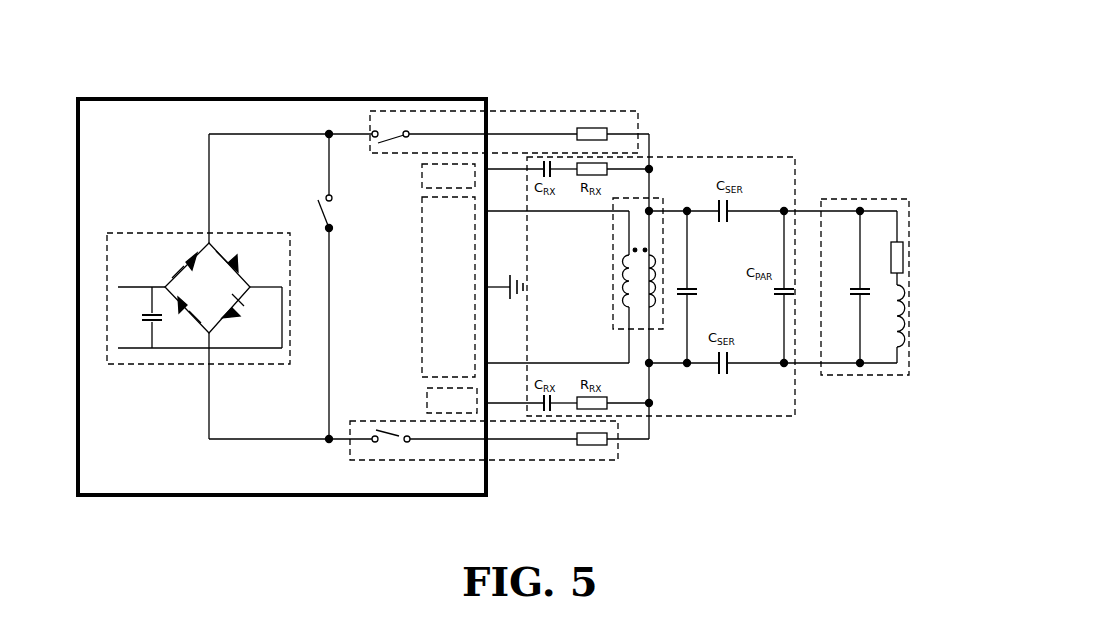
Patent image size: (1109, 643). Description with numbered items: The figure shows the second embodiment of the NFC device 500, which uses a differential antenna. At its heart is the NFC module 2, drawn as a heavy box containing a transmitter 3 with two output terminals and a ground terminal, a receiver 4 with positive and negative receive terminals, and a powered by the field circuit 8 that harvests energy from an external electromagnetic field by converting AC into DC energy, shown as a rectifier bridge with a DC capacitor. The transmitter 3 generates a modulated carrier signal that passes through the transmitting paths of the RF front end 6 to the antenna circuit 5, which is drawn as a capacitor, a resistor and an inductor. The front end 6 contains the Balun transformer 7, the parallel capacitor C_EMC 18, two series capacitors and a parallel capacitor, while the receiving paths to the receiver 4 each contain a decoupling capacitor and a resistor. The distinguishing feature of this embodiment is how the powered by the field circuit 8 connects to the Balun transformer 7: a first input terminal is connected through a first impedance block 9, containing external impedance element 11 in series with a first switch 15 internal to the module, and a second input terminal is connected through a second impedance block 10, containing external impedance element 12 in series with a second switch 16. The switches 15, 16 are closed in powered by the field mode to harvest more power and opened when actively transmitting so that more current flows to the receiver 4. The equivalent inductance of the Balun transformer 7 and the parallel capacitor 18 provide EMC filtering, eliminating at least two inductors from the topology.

The NFC module 2 is at (178, 97).
The transmitter 3 is at (422, 297).
The receiver 4 is at (422, 193).
The antenna circuit 5 is at (912, 198).
The matching network 6 is at (703, 157).
The Balun transformer 7 is at (667, 198).
The powered by the field circuit 8 is at (160, 233).
The first impedance block 9 is at (507, 103).
The second impedance block 10 is at (499, 471).
The impedance element 11 is at (592, 126).
The impedance element 12 is at (596, 447).
The first switch 15 is at (390, 128).
The second switch 16 is at (396, 445).
The parallel capacitor C_EMC 18 is at (695, 283).
The NFC transceiver system 500 is at (647, 93).